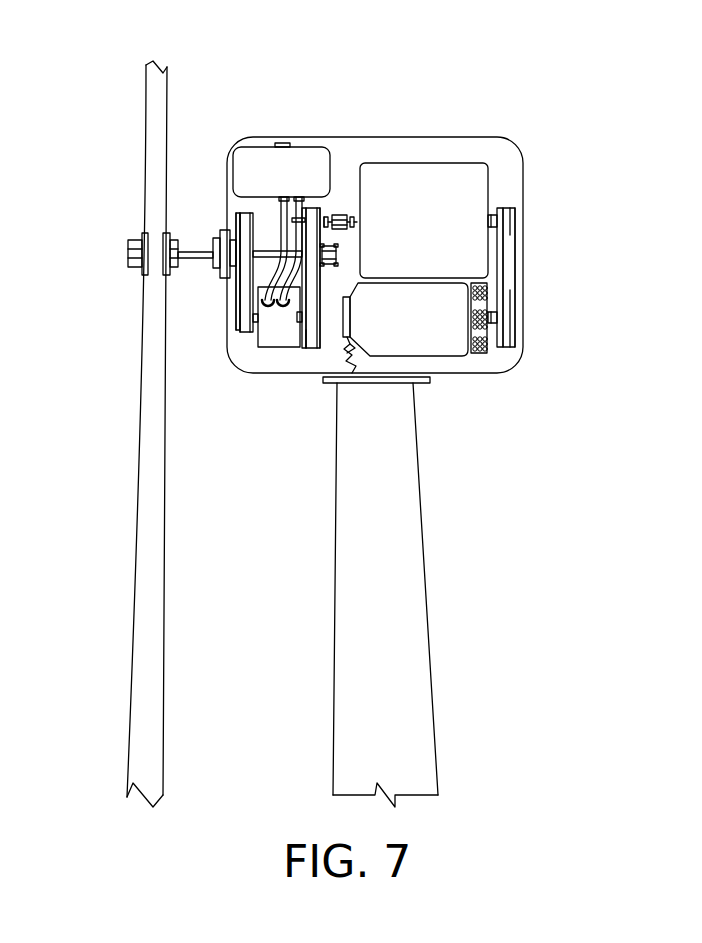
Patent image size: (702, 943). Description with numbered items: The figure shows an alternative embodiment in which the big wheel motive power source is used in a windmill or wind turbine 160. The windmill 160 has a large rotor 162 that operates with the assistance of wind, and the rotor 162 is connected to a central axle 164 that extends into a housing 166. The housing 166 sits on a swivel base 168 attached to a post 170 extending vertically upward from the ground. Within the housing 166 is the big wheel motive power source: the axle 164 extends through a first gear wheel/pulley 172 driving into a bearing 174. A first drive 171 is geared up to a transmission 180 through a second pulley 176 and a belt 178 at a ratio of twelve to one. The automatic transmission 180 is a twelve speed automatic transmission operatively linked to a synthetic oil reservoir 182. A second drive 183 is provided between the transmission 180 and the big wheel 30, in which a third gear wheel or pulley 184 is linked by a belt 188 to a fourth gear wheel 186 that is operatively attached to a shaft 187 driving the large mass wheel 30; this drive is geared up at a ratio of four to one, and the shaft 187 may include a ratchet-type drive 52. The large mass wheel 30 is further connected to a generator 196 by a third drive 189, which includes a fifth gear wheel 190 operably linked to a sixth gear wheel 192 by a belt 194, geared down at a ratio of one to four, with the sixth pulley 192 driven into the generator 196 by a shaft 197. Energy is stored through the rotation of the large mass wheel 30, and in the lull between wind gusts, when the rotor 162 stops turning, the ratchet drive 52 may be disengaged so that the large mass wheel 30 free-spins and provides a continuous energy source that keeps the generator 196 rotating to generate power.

The windmill 160 is at (364, 64).
The rotor 162 is at (147, 640).
The central axle 164 is at (188, 255).
The housing 166 is at (483, 147).
The swivel base 168 is at (400, 383).
The post 170 is at (355, 632).
The first drive 171 is at (232, 306).
The first gear wheel/pulley 172 is at (265, 217).
The bearing 174 is at (336, 256).
The second pulley 176 is at (235, 325).
The belt 178 is at (245, 293).
The transmission 180 is at (277, 337).
The synthetic oil reservoir 182 is at (263, 163).
The second drive 183 is at (325, 282).
The third gear wheel or pulley 184 is at (330, 337).
The fourth gear wheel 186 is at (328, 213).
The shaft 187 is at (338, 212).
The belt 188 is at (312, 240).
The third drive 189 is at (520, 250).
The fifth gear wheel 190 is at (515, 222).
The sixth gear wheel 192 is at (515, 306).
The belt 194 is at (507, 272).
The generator 196 is at (447, 328).
The shaft 197 is at (490, 325).
The large mass wheel 30 is at (450, 186).
The ratchet-type drive 52 is at (342, 209).